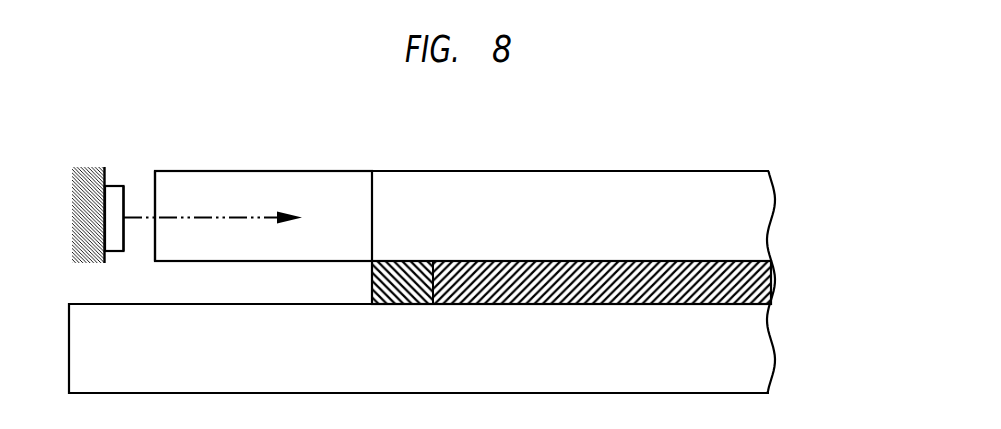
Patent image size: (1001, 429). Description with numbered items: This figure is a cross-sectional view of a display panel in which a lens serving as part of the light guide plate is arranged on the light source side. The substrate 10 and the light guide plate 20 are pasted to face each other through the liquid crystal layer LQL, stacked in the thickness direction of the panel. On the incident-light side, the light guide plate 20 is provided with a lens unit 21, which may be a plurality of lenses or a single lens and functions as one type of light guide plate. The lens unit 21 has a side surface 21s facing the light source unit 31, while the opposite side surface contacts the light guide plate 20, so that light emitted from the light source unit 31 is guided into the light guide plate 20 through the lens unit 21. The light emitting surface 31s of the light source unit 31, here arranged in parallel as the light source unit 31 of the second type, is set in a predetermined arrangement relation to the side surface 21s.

The substrate 10 is at (772, 347).
The light guide plate 20 is at (772, 217).
The lens unit 21 is at (263, 177).
The side surface 21s is at (148, 172).
The light source unit 31 is at (119, 252).
The light emitting surface 31s is at (127, 187).
The liquid crystal layer LQL is at (772, 279).